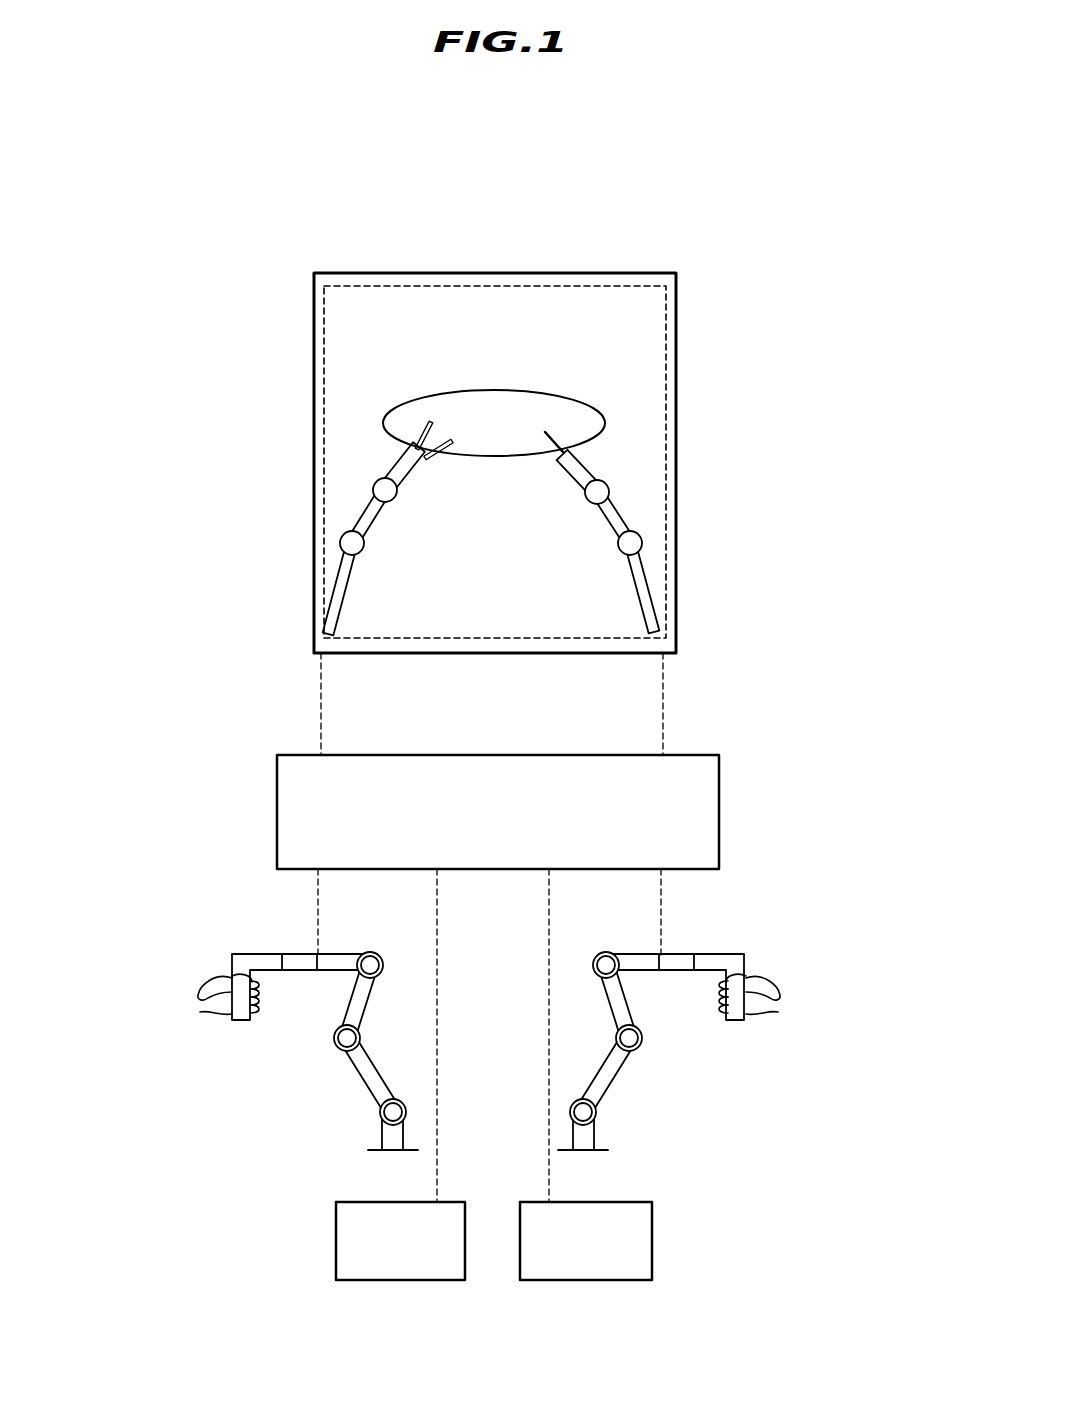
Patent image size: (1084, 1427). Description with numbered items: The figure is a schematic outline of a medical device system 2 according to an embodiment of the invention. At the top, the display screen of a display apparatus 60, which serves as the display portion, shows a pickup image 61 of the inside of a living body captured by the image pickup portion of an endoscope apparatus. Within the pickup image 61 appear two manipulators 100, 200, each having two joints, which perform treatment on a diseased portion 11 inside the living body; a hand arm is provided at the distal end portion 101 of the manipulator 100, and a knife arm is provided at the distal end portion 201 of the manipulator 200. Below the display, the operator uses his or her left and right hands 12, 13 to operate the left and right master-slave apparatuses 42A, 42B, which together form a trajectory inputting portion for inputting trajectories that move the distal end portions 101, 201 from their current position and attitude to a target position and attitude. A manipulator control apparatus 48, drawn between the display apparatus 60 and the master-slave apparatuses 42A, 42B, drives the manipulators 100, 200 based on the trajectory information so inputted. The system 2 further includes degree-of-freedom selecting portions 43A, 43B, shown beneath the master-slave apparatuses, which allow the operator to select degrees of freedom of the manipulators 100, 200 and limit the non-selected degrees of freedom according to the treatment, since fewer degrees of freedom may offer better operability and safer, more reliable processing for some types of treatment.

The medical device system 2 is at (800, 311).
The diseased portion 11 is at (553, 408).
The left hand 12 is at (758, 998).
The right hand 13 is at (200, 993).
The master-slave apparatus 42A is at (315, 1072).
The master-slave apparatus 42B is at (660, 1078).
The degree-of-freedom selecting portion 43A is at (336, 1225).
The degree-of-freedom selecting portion 43B is at (652, 1228).
The manipulator control apparatus 48 is at (719, 820).
The display apparatus 60 is at (632, 273).
The pickup image 61 is at (547, 286).
The manipulator 100 is at (368, 512).
The distal end portion 101 is at (412, 428).
The manipulator 200 is at (613, 517).
The distal end portion 201 is at (557, 443).